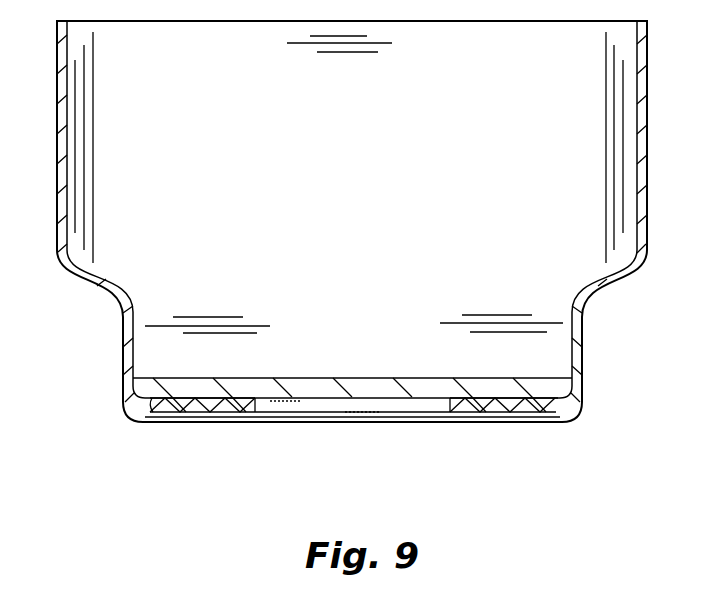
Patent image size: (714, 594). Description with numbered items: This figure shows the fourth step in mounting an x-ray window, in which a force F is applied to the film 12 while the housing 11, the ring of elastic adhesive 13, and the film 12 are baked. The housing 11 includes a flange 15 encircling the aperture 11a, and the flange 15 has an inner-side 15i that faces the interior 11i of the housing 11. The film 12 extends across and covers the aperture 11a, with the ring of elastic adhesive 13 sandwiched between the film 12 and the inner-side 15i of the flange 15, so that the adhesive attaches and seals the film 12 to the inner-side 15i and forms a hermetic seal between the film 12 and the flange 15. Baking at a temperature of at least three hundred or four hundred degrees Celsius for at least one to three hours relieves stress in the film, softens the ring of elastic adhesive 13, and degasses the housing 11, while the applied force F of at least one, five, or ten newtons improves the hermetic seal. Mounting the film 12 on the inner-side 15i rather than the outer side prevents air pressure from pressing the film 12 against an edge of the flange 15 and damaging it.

The housing 11 is at (62, 117).
The interior of the housing 11i is at (359, 178).
The aperture 11a is at (366, 421).
The film 12 is at (562, 385).
The ring of elastic adhesive 13 is at (141, 403).
The flange 15 is at (213, 417).
The inner-side of the flange 15i is at (499, 366).
The force F is at (352, 377).